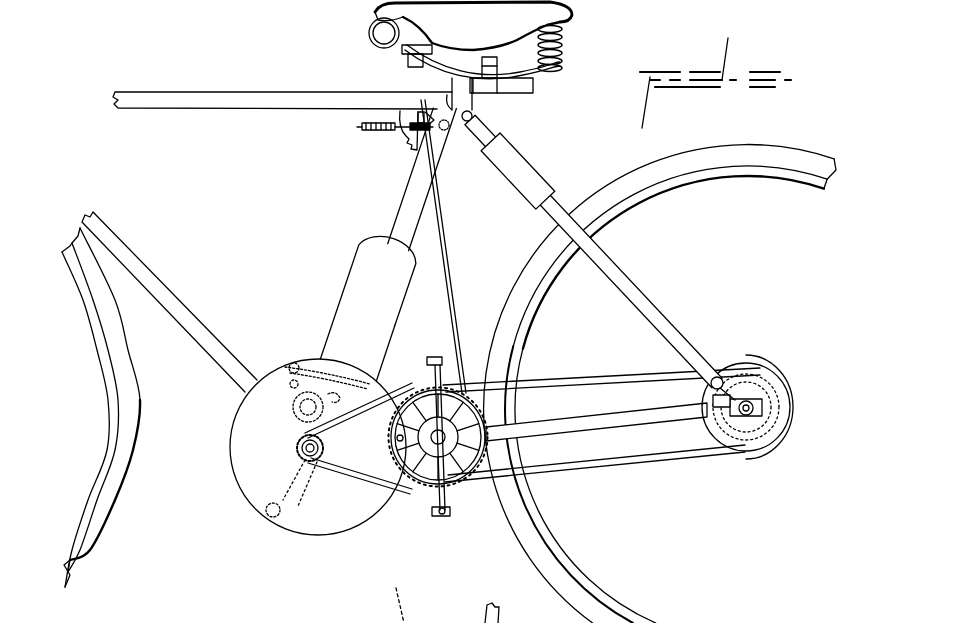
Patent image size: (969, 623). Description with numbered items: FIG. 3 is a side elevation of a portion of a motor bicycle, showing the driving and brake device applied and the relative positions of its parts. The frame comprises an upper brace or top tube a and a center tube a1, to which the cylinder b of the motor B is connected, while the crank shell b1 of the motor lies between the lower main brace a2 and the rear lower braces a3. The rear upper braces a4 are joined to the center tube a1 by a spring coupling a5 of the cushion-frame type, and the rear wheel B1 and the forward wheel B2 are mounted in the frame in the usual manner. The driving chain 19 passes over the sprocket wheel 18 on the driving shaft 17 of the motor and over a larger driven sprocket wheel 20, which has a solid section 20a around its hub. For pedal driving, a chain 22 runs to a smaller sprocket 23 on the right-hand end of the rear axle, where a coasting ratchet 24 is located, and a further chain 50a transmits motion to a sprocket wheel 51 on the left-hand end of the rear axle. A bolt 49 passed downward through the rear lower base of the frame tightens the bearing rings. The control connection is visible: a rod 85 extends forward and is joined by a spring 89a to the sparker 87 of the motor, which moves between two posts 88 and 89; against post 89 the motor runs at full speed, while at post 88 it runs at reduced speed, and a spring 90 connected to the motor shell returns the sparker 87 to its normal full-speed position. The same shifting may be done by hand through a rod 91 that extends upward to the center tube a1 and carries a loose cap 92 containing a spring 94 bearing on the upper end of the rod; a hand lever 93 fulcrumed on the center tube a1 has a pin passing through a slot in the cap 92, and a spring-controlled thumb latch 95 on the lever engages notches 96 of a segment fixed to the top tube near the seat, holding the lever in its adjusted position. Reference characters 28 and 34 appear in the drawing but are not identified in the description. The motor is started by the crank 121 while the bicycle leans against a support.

The top tube a is at (285, 91).
The center tube a1 is at (437, 178).
The lower main brace a2 is at (187, 308).
The rear lower braces a3 is at (642, 418).
The rear upper braces a4 is at (655, 306).
The spring coupling a5 is at (513, 157).
The cylinder b is at (368, 297).
The crank shell b1 is at (247, 502).
The motor B is at (372, 386).
The rear wheel B1 is at (660, 384).
The forward wheel B2 is at (58, 407).
The driving shaft 17 is at (298, 448).
The sprocket wheel 18 is at (327, 447).
The driving chain 19 is at (377, 481).
The driven sprocket wheel 20 is at (462, 372).
The solid section 20a is at (438, 437).
The chain 22 is at (548, 380).
The smaller sprocket 23 is at (753, 388).
The coasting ratchet 24 is at (762, 402).
The sprocket bolt 28 is at (414, 458).
The lever block 34 is at (360, 144).
The bolt 49 is at (410, 465).
The chain 50a is at (655, 375).
The sprocket wheel 51 is at (747, 368).
The rod 85 is at (420, 398).
The sparker 87 is at (296, 400).
The post 88 is at (340, 399).
The post 89 is at (290, 386).
The spring 89a is at (334, 374).
The spring 90 is at (297, 363).
The rod 91 is at (447, 264).
The cap 92 is at (421, 112).
The hand lever 93 is at (392, 127).
The spring 94 is at (432, 122).
The thumb latch 95 is at (356, 127).
The notches 96 is at (410, 137).
The crank 121 is at (283, 522).